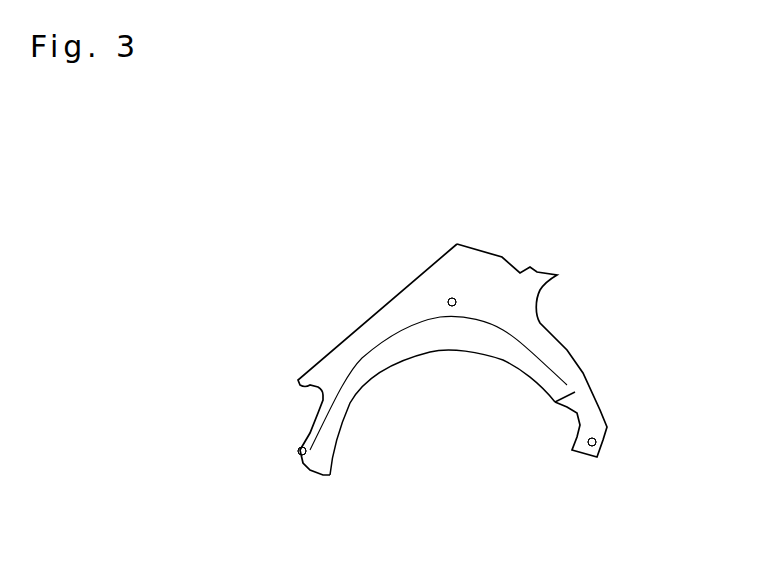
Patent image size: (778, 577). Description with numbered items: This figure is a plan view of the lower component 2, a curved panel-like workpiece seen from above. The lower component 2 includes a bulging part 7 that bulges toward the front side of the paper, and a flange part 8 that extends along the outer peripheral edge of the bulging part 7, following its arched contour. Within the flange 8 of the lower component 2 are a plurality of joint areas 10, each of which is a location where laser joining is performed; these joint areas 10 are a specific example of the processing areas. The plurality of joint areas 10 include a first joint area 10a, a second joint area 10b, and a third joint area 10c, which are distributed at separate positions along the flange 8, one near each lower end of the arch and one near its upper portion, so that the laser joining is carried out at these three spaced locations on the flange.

The lower component 2 is at (611, 158).
The bulging part 7 is at (433, 352).
The flange part 8 is at (548, 353).
The joint areas 10 is at (447, 376).
The first joint area 10a is at (299, 455).
The second joint area 10b is at (449, 299).
The third joint area 10c is at (594, 447).